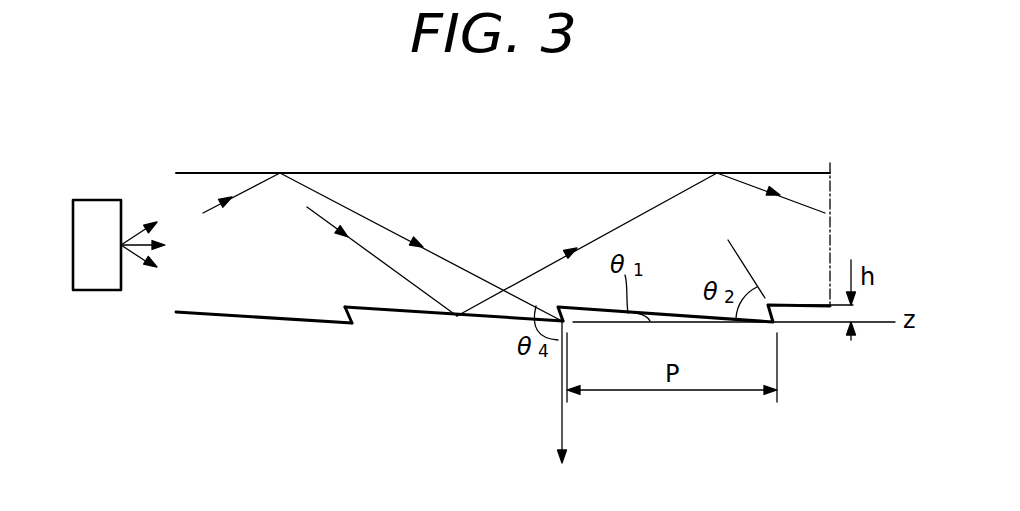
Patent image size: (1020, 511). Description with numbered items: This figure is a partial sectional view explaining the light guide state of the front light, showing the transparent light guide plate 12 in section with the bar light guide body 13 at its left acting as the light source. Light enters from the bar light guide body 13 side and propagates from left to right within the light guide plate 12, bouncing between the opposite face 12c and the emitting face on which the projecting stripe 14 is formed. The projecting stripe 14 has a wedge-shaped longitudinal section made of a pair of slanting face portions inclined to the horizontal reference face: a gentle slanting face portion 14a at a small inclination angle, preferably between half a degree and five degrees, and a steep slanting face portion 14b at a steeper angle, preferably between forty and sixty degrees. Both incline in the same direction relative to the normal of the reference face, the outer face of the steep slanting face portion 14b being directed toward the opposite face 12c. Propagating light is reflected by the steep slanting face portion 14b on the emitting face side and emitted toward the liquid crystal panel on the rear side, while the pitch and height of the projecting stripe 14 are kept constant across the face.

The light guide plate 12 is at (543, 267).
The opposite face 12c is at (485, 173).
The bar light guide body 13 is at (90, 283).
The projecting stripe 14 is at (583, 359).
The gentle slanting face portion 14a is at (232, 318).
The steep slanting face portion 14b is at (358, 315).